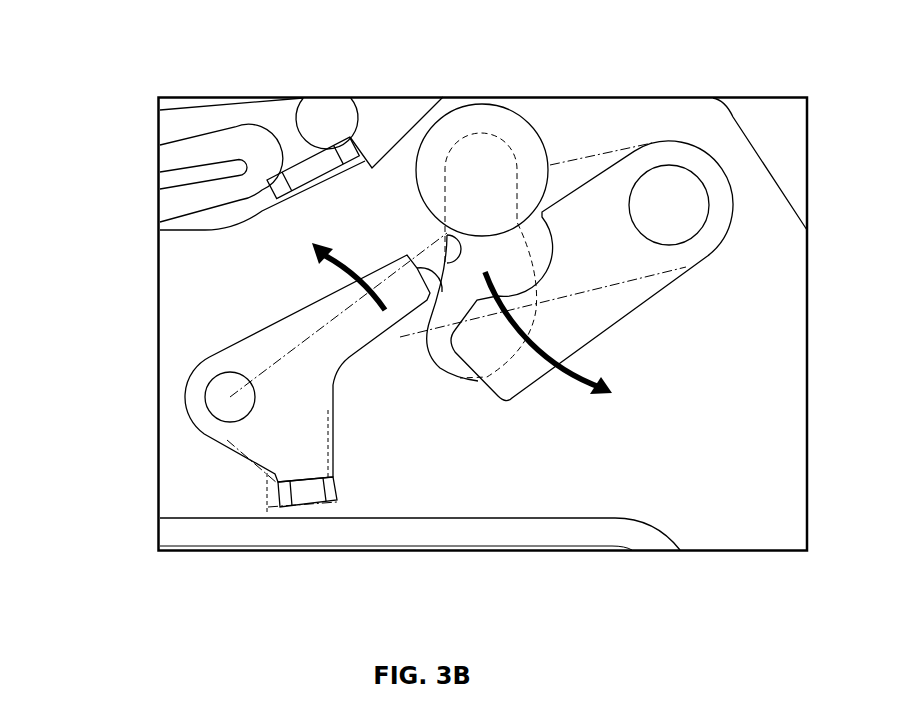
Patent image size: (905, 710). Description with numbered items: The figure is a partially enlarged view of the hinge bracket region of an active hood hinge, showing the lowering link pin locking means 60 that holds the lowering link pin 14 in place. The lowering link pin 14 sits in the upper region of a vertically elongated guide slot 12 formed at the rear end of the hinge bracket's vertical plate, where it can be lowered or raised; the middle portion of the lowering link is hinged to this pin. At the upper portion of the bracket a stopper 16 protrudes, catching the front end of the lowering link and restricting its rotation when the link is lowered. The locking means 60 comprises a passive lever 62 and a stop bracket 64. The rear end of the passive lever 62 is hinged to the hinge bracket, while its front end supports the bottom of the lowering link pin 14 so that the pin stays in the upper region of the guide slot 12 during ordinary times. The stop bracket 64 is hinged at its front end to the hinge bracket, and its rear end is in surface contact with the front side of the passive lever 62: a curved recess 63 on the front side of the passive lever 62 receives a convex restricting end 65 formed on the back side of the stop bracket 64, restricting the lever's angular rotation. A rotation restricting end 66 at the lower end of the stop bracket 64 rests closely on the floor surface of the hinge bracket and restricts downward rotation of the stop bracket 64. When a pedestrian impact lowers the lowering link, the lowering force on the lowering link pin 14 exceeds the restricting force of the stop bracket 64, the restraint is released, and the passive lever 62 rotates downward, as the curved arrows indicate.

The guide slot 12 is at (447, 235).
The lowering link pin 14 is at (530, 118).
The stopper 16 is at (302, 173).
The lowering link pin locking means 60 is at (401, 381).
The passive lever 62 is at (579, 319).
The curved recess 63 is at (462, 381).
The stop bracket 64 is at (246, 427).
The convex restricting end 65 is at (427, 300).
The rotation restricting end 66 is at (303, 493).